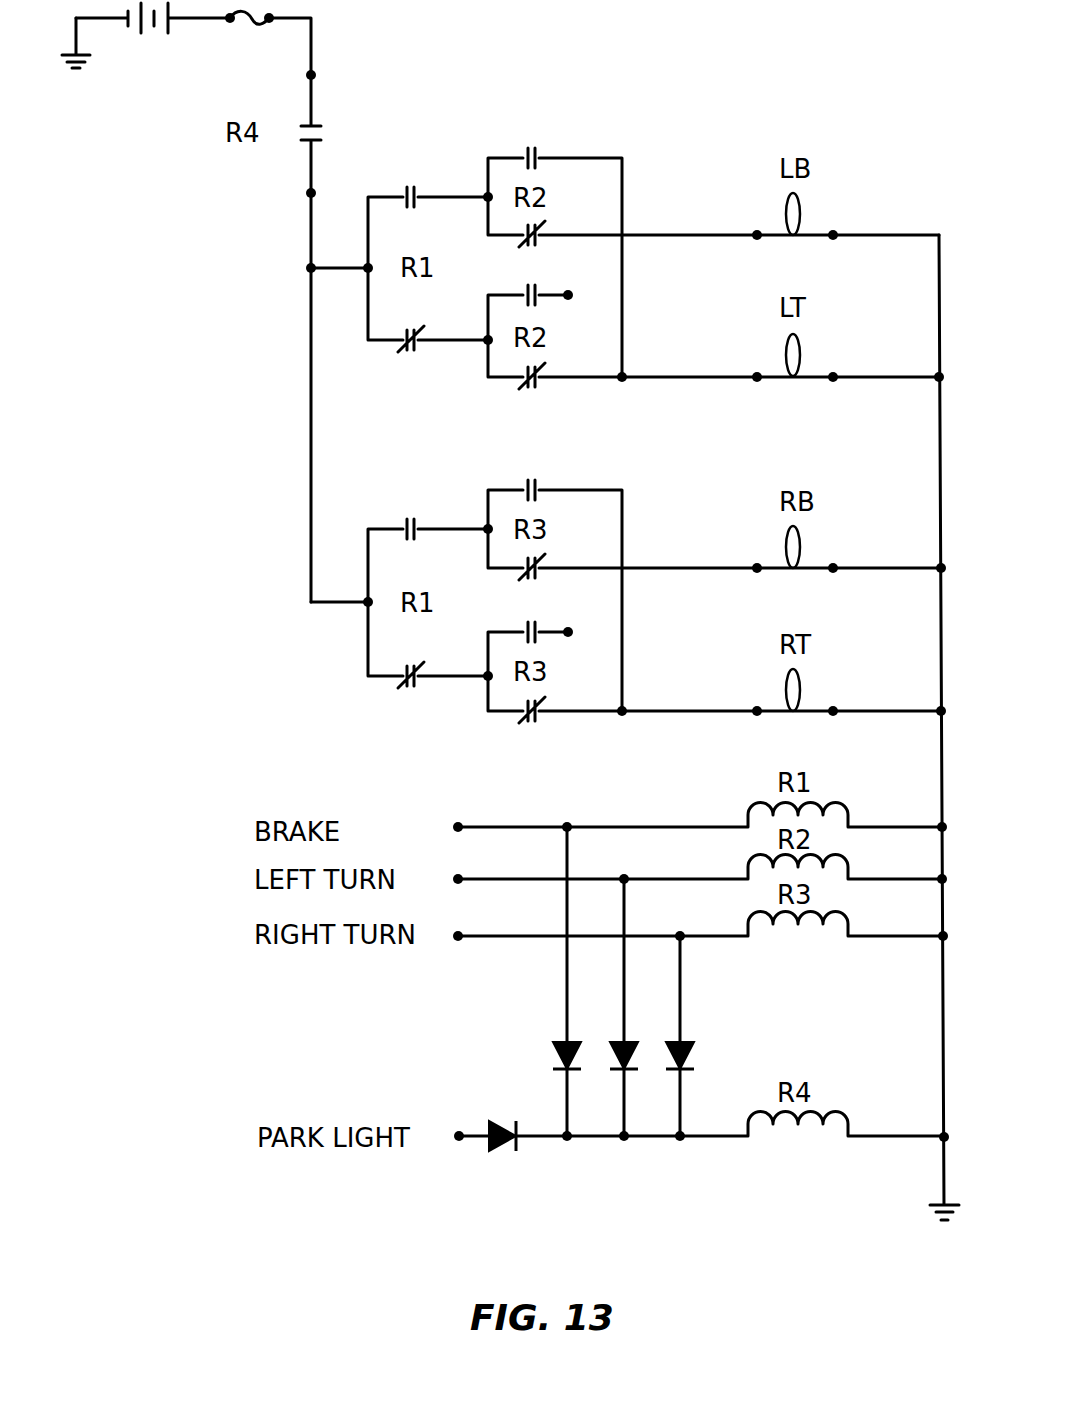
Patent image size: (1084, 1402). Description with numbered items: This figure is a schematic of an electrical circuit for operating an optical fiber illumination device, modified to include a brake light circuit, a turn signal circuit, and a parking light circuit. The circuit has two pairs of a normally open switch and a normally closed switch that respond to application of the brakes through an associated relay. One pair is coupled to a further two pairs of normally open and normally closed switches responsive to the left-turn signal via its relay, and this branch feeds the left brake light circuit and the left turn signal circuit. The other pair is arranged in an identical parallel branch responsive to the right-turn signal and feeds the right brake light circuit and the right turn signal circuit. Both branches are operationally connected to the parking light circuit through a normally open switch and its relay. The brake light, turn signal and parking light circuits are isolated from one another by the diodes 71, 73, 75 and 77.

The diode 71 is at (488, 1127).
The diode 73 is at (561, 1040).
The diode 75 is at (618, 1040).
The diode 77 is at (686, 1043).